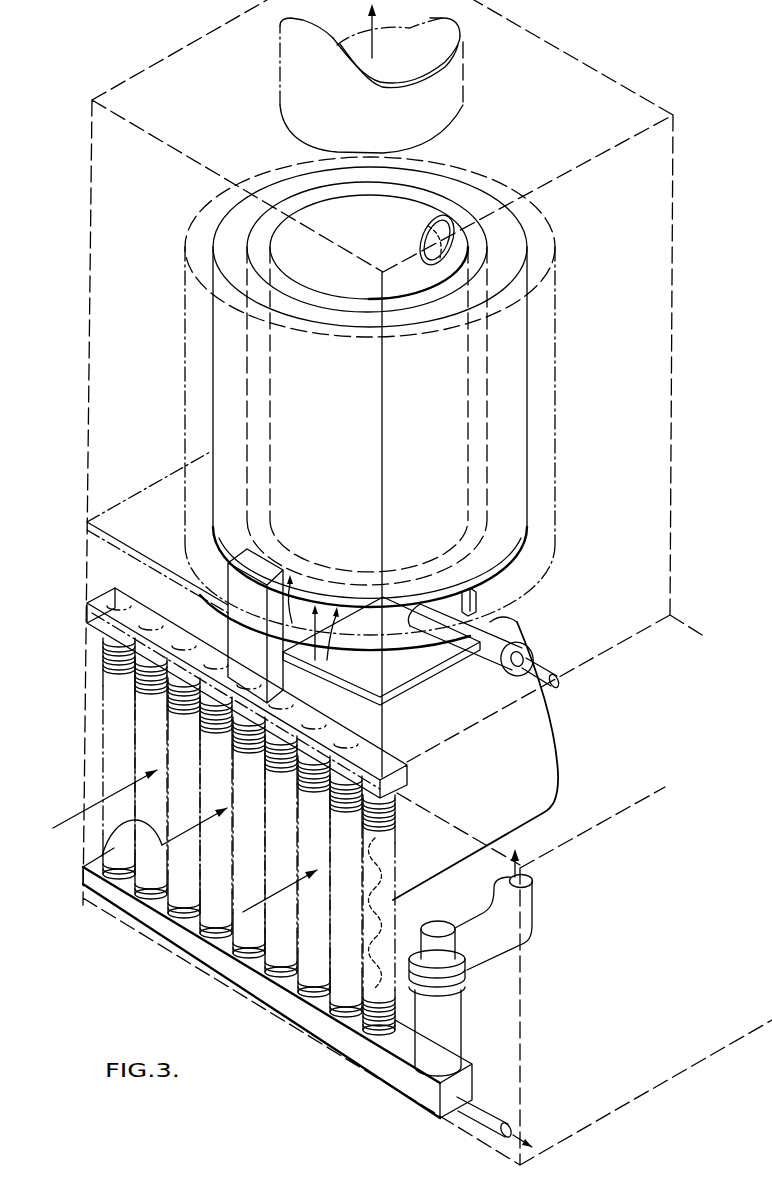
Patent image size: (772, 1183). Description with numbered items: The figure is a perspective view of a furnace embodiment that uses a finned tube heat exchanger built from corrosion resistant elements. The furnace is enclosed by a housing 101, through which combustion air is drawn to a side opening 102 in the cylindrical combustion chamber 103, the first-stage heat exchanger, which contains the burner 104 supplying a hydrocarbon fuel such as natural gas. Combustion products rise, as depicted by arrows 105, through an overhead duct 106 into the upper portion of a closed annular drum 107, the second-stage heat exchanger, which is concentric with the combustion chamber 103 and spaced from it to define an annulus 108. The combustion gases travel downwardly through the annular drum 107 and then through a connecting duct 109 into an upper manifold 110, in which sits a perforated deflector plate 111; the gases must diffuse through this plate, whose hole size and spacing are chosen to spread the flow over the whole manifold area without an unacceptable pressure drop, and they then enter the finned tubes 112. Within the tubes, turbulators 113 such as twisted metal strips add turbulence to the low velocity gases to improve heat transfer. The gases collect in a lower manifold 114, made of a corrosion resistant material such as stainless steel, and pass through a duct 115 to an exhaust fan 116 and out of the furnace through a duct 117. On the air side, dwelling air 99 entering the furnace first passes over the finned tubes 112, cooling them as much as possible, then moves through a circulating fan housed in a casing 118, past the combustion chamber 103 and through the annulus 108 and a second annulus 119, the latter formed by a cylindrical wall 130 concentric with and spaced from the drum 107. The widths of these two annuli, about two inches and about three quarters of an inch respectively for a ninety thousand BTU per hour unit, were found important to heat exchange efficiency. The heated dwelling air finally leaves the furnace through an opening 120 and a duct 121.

The dwelling air 99 is at (217, 861).
The housing 101 is at (633, 385).
The side opening 102 is at (418, 624).
The combustion chamber 103 is at (415, 190).
The burner 104 is at (478, 631).
The arrows 105 is at (398, 288).
The overhead duct 106 is at (457, 207).
The closed annular drum 107 is at (538, 282).
The annulus 108 is at (520, 223).
The connecting duct 109 is at (228, 632).
The upper manifold 110 is at (407, 777).
The perforated deflector plate 111 is at (95, 603).
The finned tubes 112 is at (133, 737).
The turbulators 113 is at (363, 980).
The lower manifold 114 is at (373, 1060).
The duct 115 is at (450, 1022).
The exhaust fan 116 is at (447, 942).
The duct 117 is at (535, 905).
The casing 118 is at (533, 762).
The annulus 119 is at (527, 290).
The opening 120 is at (423, 135).
The duct 121 is at (457, 86).
The cylindrical wall 130 is at (543, 395).